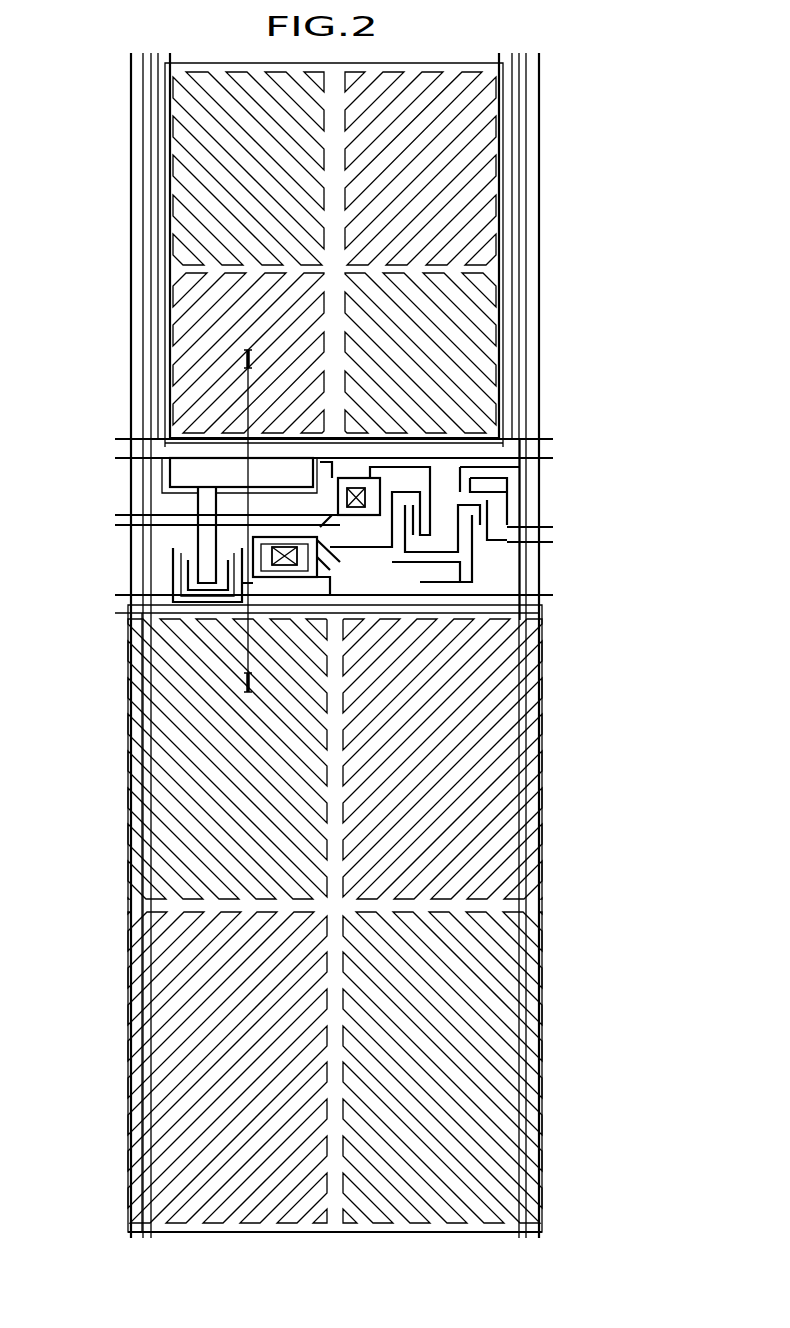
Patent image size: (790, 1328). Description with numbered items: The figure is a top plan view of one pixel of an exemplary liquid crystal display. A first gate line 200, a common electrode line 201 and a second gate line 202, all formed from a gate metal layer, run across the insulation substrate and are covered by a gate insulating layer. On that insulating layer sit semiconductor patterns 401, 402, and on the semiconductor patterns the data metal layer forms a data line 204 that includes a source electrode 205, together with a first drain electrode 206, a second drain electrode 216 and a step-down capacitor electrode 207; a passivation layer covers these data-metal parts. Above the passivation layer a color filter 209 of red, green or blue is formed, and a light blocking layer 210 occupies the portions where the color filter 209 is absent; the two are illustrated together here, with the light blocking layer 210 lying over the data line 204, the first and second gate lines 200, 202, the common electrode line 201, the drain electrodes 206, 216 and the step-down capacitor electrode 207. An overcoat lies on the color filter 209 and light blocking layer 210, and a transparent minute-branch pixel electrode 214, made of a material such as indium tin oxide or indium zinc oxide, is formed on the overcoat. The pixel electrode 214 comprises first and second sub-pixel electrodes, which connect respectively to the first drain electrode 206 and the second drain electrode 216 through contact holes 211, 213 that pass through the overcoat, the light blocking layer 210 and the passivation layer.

The first gate line 200 is at (360, 548).
The common electrode line 201 is at (350, 458).
The second gate line 202 is at (487, 625).
The data line 204 is at (540, 573).
The source electrode 205 is at (445, 547).
The first drain electrode 206 is at (398, 467).
The step-down capacitor electrode 207 is at (208, 455).
The color filter 209 is at (404, 918).
The light blocking layer 210 is at (540, 770).
The contact hole 211 is at (365, 497).
The contact hole 213 is at (283, 543).
The pixel electrode 214 is at (307, 368).
The second drain electrode 216 is at (277, 583).
The semiconductor pattern 401 is at (476, 500).
The semiconductor pattern 402 is at (185, 573).